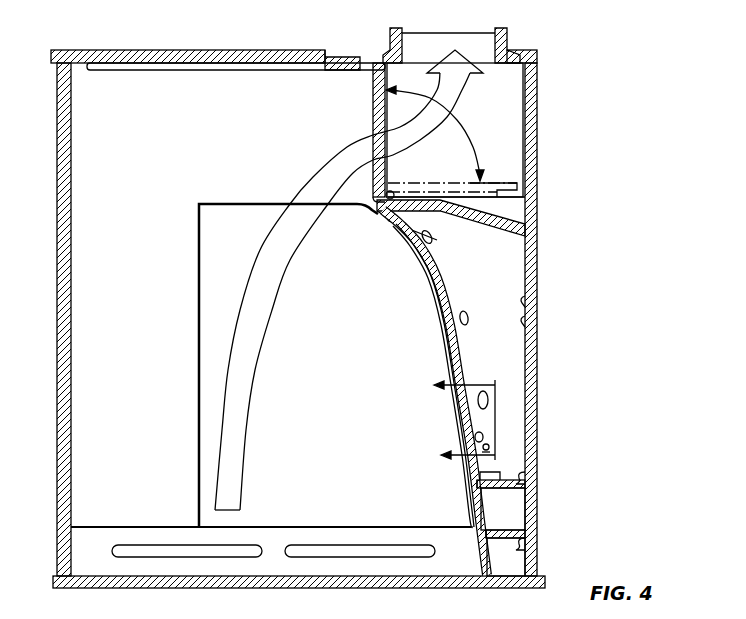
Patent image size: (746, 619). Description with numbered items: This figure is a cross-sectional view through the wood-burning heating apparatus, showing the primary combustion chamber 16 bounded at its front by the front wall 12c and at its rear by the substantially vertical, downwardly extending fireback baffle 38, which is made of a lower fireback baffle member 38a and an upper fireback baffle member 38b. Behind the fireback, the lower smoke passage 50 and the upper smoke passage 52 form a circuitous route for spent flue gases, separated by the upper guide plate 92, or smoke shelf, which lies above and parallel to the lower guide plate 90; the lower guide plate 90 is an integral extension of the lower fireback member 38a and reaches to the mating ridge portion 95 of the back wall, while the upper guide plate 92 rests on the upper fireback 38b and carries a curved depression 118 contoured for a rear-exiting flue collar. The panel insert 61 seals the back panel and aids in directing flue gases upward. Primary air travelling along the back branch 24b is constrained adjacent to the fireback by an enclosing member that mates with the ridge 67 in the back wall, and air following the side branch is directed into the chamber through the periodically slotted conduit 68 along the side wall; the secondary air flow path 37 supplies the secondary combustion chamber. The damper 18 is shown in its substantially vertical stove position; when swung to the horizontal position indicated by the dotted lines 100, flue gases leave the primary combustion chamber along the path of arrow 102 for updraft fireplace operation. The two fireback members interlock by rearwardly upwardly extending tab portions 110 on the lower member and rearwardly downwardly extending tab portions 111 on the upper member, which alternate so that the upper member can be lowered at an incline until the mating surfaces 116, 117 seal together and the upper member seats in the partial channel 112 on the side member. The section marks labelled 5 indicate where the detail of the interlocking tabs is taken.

The section line of FIG. 5 is at (457, 420).
The front wall 12c is at (58, 550).
The primary combustion chamber 16 is at (205, 151).
The damper 18 is at (373, 103).
The back branch of primary air supply path 24b is at (515, 566).
The secondary air flow path 37 is at (505, 512).
The fireback baffle 38 is at (471, 374).
The lower fireback baffle member 38a is at (483, 455).
The upper fireback baffle member 38b is at (452, 320).
The lower smoke passage 50 is at (515, 274).
The upper smoke passage 52 is at (504, 125).
The panel insert 61 is at (537, 240).
The ridge 67 is at (535, 534).
The slotted conduit 68 is at (166, 525).
The lower guide plate 90 is at (488, 480).
The upper guide plate 92 is at (440, 212).
The mating ridge portion 95 is at (530, 472).
The dotted lines indicating horizontal damper position 100 is at (508, 178).
The arrow indicating flue gas path 102 is at (240, 312).
The tab portions of lower fireback 110 is at (493, 412).
The tab portions of upper fireback 111 is at (488, 441).
The partial channel 112 is at (417, 252).
The mating surface of upper fireback member 116 is at (478, 440).
The mating surface of lower fireback member 117 is at (445, 436).
The curved depression 118 is at (530, 208).